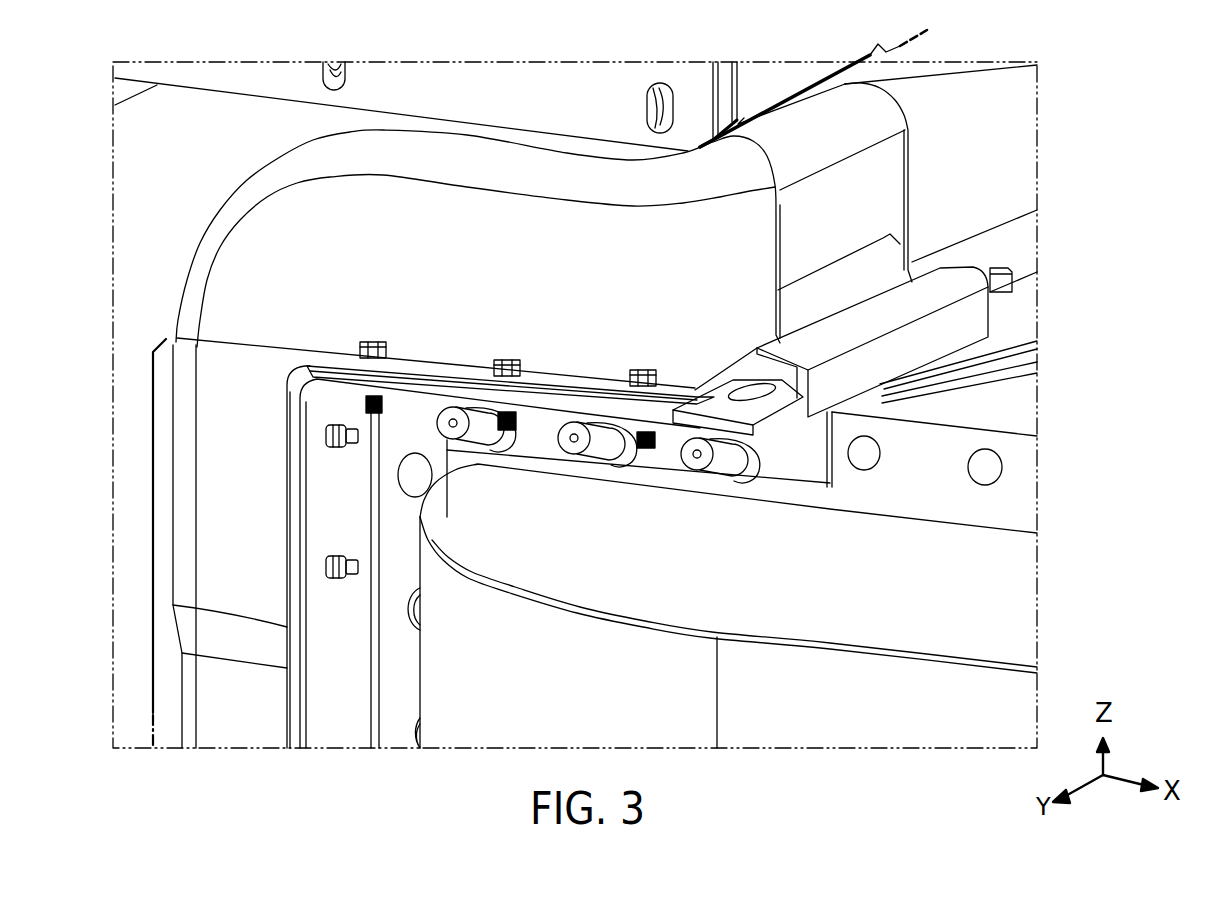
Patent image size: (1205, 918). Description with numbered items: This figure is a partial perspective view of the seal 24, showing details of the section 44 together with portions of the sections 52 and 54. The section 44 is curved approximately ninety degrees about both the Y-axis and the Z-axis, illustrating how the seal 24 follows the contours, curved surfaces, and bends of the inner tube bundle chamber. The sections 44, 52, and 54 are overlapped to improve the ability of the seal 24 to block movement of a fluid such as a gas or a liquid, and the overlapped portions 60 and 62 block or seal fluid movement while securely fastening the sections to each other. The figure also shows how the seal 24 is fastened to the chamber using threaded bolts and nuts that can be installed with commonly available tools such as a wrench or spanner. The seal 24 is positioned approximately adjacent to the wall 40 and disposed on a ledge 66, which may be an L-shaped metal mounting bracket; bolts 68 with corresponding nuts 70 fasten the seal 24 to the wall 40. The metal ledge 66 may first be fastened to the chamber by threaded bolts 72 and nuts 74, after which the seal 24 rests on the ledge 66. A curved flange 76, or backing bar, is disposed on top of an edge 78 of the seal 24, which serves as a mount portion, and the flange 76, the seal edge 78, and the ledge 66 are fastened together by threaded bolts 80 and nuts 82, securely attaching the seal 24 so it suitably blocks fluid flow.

The seal 24 is at (470, 85).
The wall 40 is at (184, 201).
The section 44 is at (523, 256).
The section 52 is at (993, 169).
The section 54 is at (157, 530).
The overlapped portion 60 is at (905, 195).
The overlapped portion 62 is at (240, 358).
The ledge 66 is at (350, 664).
The bolt 68 is at (354, 449).
The nut 70 is at (335, 449).
The threaded bolt 72 is at (447, 426).
The nut 74 is at (487, 460).
The curved flange 76 is at (568, 375).
The edge 78 is at (658, 402).
The threaded bolt 80 is at (312, 362).
The nut 82 is at (366, 398).